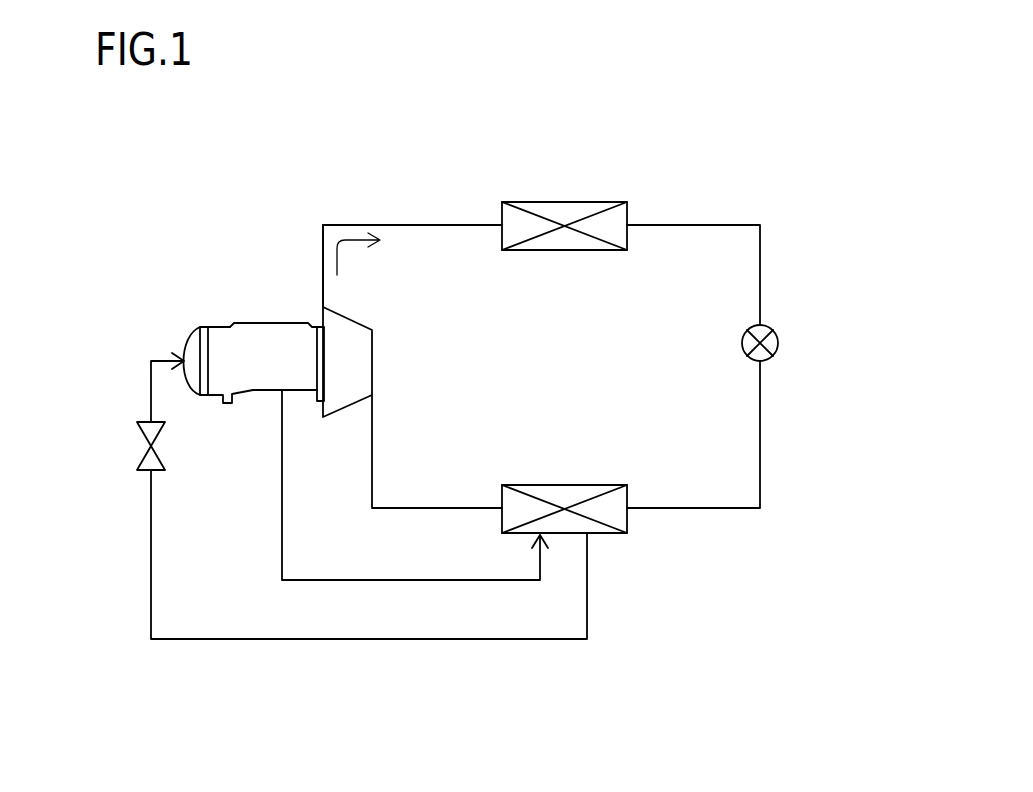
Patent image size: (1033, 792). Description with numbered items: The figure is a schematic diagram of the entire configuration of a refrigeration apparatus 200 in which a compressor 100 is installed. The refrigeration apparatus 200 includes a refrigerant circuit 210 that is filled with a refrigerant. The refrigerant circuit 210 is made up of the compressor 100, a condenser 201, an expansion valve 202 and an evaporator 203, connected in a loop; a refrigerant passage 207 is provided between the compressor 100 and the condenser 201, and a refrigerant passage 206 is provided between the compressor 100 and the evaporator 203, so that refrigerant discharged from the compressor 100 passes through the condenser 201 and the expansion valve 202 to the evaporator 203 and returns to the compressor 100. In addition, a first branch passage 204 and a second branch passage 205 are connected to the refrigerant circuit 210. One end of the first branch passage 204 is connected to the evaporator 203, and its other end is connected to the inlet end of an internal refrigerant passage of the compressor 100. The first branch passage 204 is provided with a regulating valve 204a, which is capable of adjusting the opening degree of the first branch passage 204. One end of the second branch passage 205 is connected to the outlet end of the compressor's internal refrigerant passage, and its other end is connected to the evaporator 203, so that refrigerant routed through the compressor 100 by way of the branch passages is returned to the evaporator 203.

The compressor 100 is at (373, 356).
The refrigeration apparatus 200 is at (656, 161).
The condenser 201 is at (560, 250).
The expansion valve 202 is at (778, 342).
The evaporator 203 is at (587, 485).
The first branch passage 204 is at (482, 639).
The regulating valve 204a is at (137, 432).
The second branch passage 205 is at (322, 580).
The refrigerant passage 206 is at (373, 435).
The refrigerant passage 207 is at (405, 225).
The refrigerant circuit 210 is at (737, 225).